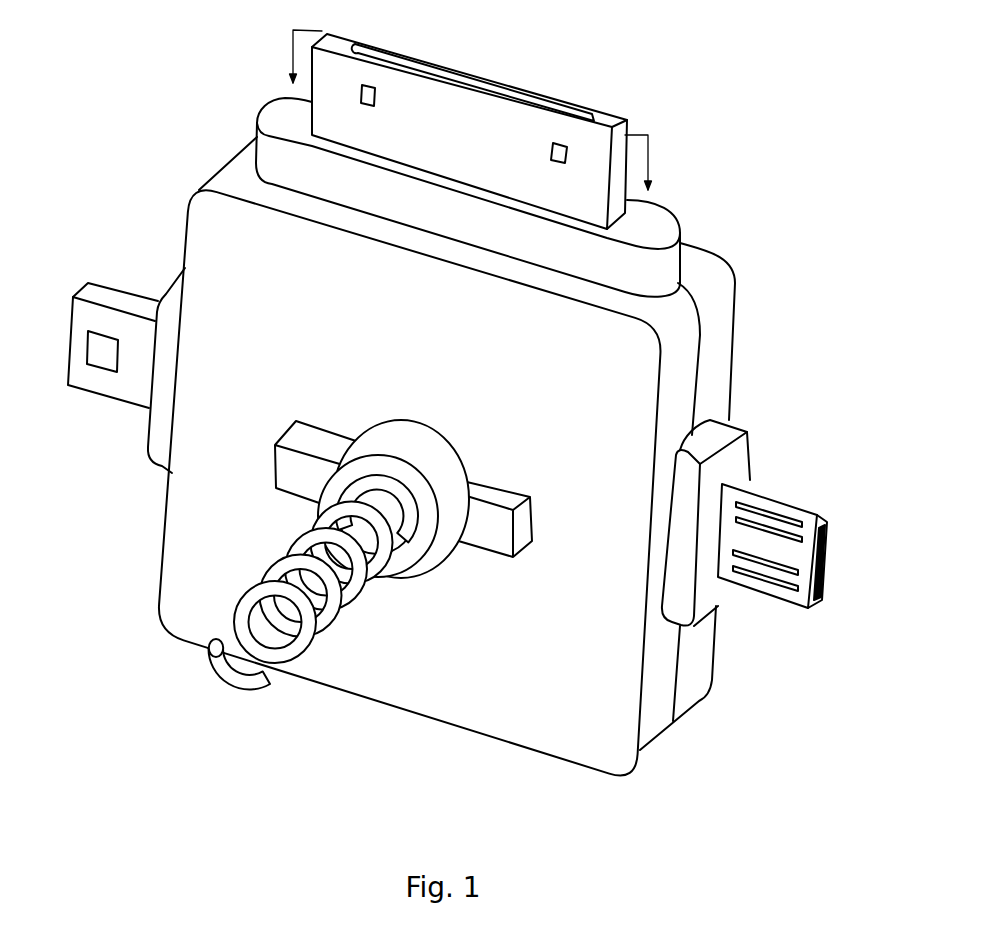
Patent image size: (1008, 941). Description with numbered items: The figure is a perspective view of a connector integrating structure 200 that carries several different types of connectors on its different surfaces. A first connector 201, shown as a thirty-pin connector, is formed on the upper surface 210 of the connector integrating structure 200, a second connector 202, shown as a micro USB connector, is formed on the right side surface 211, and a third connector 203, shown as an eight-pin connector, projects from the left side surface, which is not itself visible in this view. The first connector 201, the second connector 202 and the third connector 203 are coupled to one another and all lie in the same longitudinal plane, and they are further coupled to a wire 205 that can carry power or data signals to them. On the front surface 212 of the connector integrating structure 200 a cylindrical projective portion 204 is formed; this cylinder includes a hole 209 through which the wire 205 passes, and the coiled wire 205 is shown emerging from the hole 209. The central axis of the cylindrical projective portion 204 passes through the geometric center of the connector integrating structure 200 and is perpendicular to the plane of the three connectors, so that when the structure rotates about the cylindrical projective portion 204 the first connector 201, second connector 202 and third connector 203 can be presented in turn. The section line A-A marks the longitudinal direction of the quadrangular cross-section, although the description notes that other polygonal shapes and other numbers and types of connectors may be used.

The connector integrating structure 200 is at (486, 415).
The first connector 201 is at (594, 146).
The second connector 202 is at (808, 525).
The third connector 203 is at (107, 380).
The cylindrical projective portion 204 is at (289, 596).
The wire 205 is at (220, 667).
The hole 209 is at (360, 488).
The upper surface 210 is at (688, 252).
The right side surface 211 is at (660, 692).
The front surface 212 is at (497, 710).